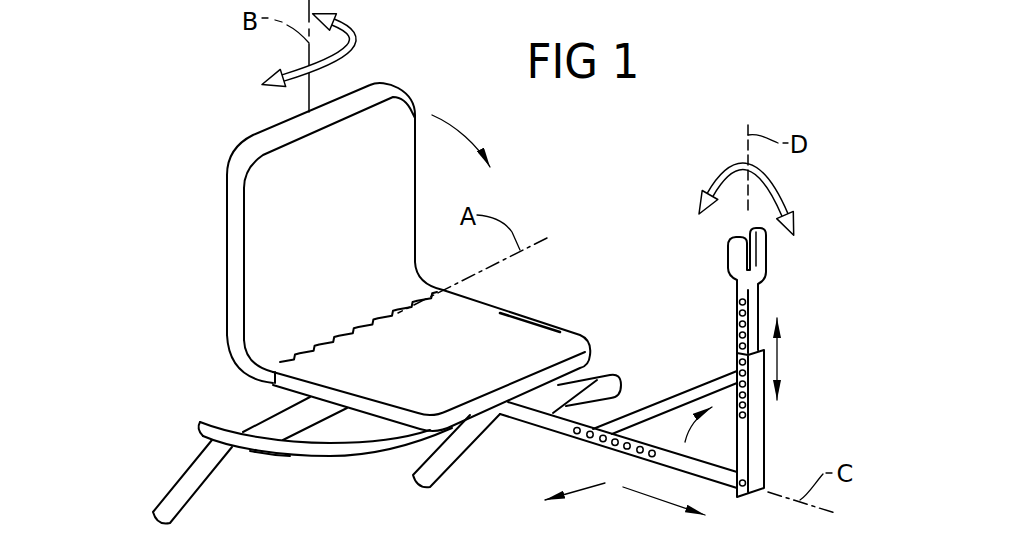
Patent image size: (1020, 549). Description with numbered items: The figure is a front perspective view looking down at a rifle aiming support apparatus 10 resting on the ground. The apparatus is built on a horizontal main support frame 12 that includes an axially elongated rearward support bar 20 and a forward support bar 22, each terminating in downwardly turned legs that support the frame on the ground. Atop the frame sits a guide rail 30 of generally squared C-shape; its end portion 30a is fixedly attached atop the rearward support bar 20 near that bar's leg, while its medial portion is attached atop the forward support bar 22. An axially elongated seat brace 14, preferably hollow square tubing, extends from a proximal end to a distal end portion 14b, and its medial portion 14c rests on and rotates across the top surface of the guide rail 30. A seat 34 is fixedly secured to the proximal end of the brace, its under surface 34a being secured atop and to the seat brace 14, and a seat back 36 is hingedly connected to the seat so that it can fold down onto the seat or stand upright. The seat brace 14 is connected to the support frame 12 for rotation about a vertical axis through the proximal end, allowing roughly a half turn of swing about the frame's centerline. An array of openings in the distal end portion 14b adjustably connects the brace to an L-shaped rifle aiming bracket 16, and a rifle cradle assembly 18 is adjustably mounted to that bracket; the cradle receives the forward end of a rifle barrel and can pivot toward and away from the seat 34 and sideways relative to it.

The support apparatus 10 is at (672, 145).
The horizontal main support frame 12 is at (168, 475).
The seat brace 14 is at (593, 414).
The distal end portion 14b is at (557, 427).
The medial portion 14c is at (572, 382).
The L-shaped rifle aiming bracket 16 is at (767, 447).
The rifle cradle assembly 18 is at (773, 253).
The rearward support bar 20 is at (258, 422).
The forward support bar 22 is at (440, 480).
The guide rail 30 is at (313, 458).
The end portion of guide rail 30a is at (262, 452).
The seat 34 is at (587, 330).
The under surface 34a is at (485, 318).
The seat back 36 is at (226, 274).